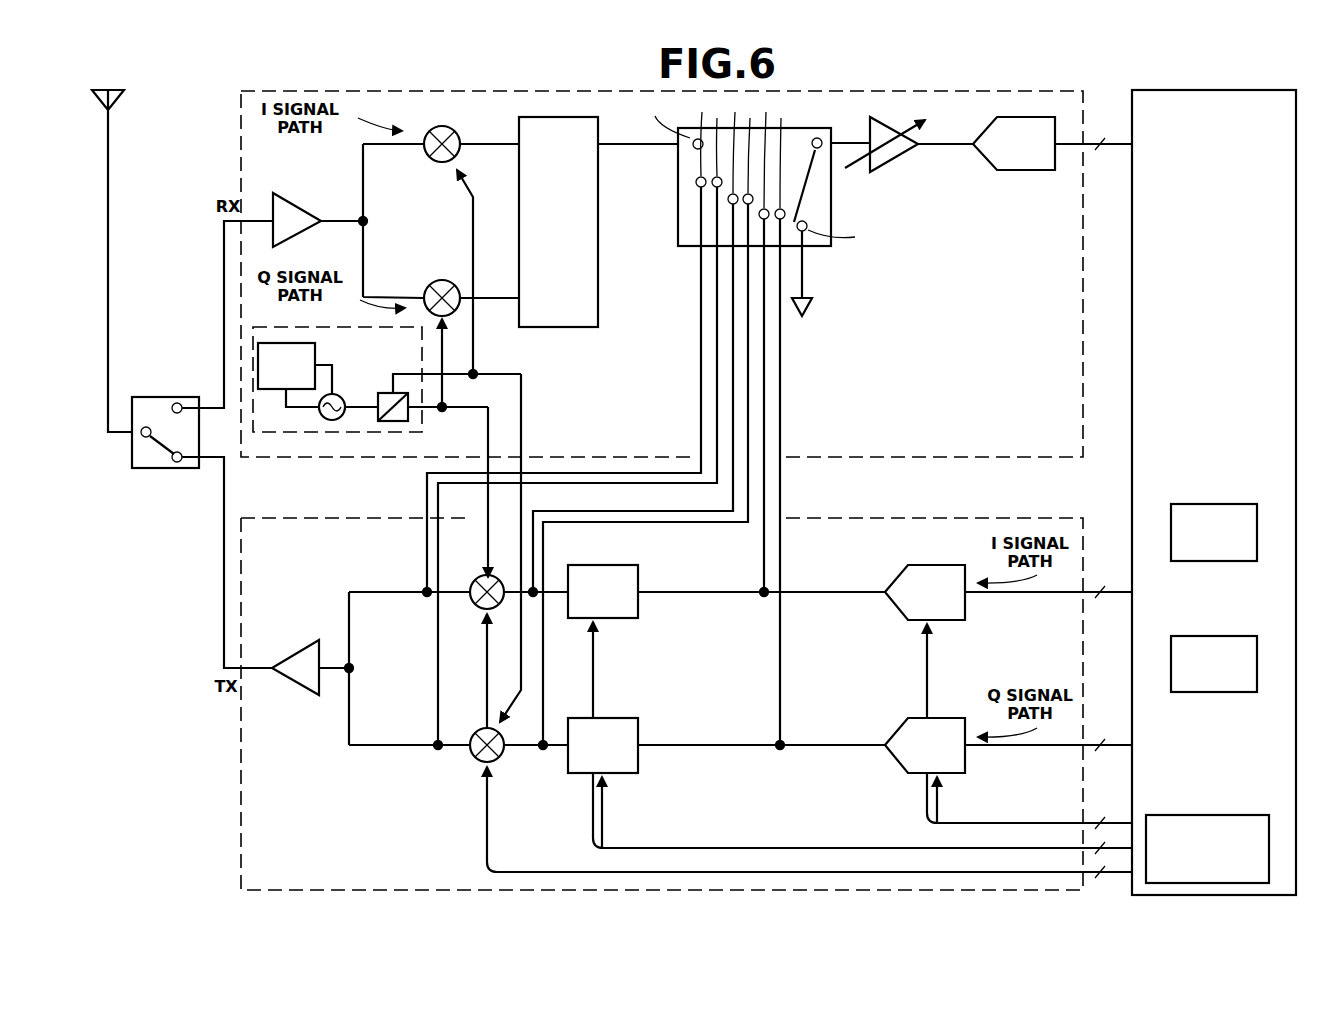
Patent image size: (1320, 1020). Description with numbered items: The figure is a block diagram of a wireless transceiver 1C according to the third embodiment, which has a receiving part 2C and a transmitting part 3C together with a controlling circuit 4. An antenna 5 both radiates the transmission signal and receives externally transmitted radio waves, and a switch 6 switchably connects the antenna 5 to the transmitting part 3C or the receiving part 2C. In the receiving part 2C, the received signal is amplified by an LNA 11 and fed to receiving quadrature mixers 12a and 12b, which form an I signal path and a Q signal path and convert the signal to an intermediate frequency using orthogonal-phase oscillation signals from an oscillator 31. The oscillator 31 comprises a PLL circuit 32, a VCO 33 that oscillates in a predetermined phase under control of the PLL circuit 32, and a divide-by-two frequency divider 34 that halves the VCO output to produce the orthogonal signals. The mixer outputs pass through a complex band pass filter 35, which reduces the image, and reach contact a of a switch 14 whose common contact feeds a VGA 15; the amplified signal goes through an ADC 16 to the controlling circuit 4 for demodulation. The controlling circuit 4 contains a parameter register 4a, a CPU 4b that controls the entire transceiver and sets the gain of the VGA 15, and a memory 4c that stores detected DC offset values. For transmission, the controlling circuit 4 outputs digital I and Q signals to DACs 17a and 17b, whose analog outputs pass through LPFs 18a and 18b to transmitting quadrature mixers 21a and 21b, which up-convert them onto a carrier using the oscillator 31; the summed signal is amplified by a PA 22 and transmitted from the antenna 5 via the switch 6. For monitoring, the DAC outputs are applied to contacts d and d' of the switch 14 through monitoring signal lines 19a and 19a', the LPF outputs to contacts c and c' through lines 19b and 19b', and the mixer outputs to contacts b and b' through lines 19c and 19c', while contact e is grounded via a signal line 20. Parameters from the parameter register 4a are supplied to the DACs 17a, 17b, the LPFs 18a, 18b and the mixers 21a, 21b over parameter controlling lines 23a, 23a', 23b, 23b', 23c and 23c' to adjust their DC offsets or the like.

The wireless transceiver 1C is at (172, 722).
The receiving part 2C is at (855, 462).
The transmitting part 3C is at (241, 862).
The controlling circuit 4 is at (1318, 104).
The parameter register 4a is at (1206, 815).
The CPU 4b is at (1238, 561).
The memory 4c is at (1238, 692).
The antenna 5 is at (122, 94).
The switch 6 is at (157, 396).
The LNA 11 is at (291, 198).
The receiving quadrature mixer 12a is at (445, 126).
The receiving quadrature mixer 12b is at (432, 278).
The switch 14 is at (833, 206).
The VGA 15 is at (905, 158).
The ADC 16 is at (1020, 172).
The DAC 17a is at (893, 573).
The DAC 17b is at (895, 768).
The LPF 18a is at (608, 565).
The LPF 18b is at (620, 718).
The monitoring signal line 19a is at (808, 405).
The monitoring signal line 19a' is at (819, 482).
The monitoring signal line 19b is at (633, 398).
The monitoring signal line 19b' is at (645, 474).
The monitoring signal line 19c is at (564, 389).
The monitoring signal line 19c' is at (577, 466).
The signal line 20 is at (804, 280).
The transmitting quadrature mixer 21a is at (474, 577).
The transmitting quadrature mixer 21b is at (472, 760).
The PA 22 is at (292, 645).
The parameter controlling line 23a is at (887, 671).
The parameter controlling line 23a' is at (1030, 801).
The parameter controlling line 23b is at (631, 670).
The parameter controlling line 23b' is at (863, 813).
The parameter controlling line 23c is at (465, 670).
The parameter controlling line 23c' is at (810, 822).
The oscillator 31 is at (387, 446).
The phase locked loop circuit 32 is at (318, 358).
The voltage-controlled oscillator 33 is at (338, 420).
The divide-by-2 frequency divider 34 is at (400, 421).
The complex band pass filter 35 is at (574, 116).